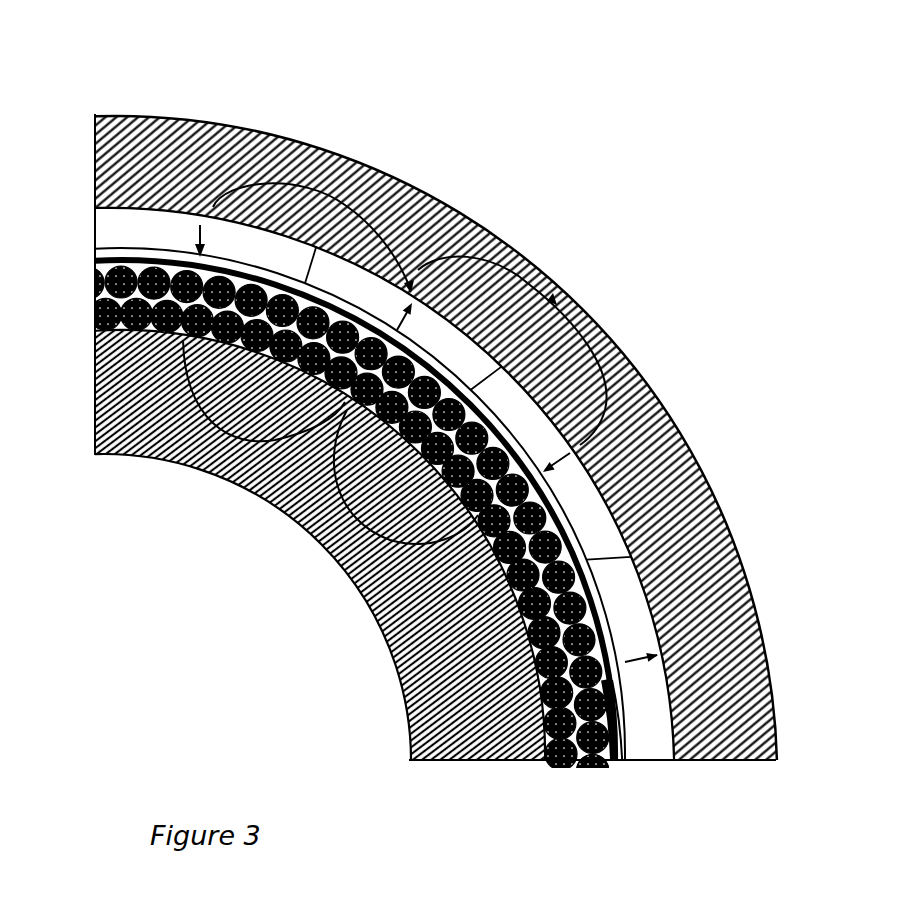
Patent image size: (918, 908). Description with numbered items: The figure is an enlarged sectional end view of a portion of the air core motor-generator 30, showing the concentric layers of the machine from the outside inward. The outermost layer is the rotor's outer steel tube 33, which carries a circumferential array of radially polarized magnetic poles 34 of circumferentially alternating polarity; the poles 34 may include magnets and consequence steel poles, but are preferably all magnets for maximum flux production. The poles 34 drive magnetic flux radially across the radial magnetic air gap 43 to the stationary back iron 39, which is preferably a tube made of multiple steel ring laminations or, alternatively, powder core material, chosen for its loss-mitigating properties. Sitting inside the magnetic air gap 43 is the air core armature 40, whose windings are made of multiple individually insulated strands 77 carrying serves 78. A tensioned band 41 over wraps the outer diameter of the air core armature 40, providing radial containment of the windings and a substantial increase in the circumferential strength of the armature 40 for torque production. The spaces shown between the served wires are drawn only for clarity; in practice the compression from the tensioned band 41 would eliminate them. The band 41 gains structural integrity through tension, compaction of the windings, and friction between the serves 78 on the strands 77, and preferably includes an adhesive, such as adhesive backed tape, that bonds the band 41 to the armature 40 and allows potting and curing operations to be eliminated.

The motor-generator 30 is at (185, 60).
The outer steel tube 33 is at (313, 168).
The magnetic poles 34 is at (95, 225).
The tensioned band 41 is at (96, 264).
The back iron 39 is at (95, 385).
The air core armature 40 is at (557, 778).
The individually insulated strands 77 is at (611, 768).
The serves 78 is at (601, 768).
The radial magnetic air gap 43 is at (630, 770).